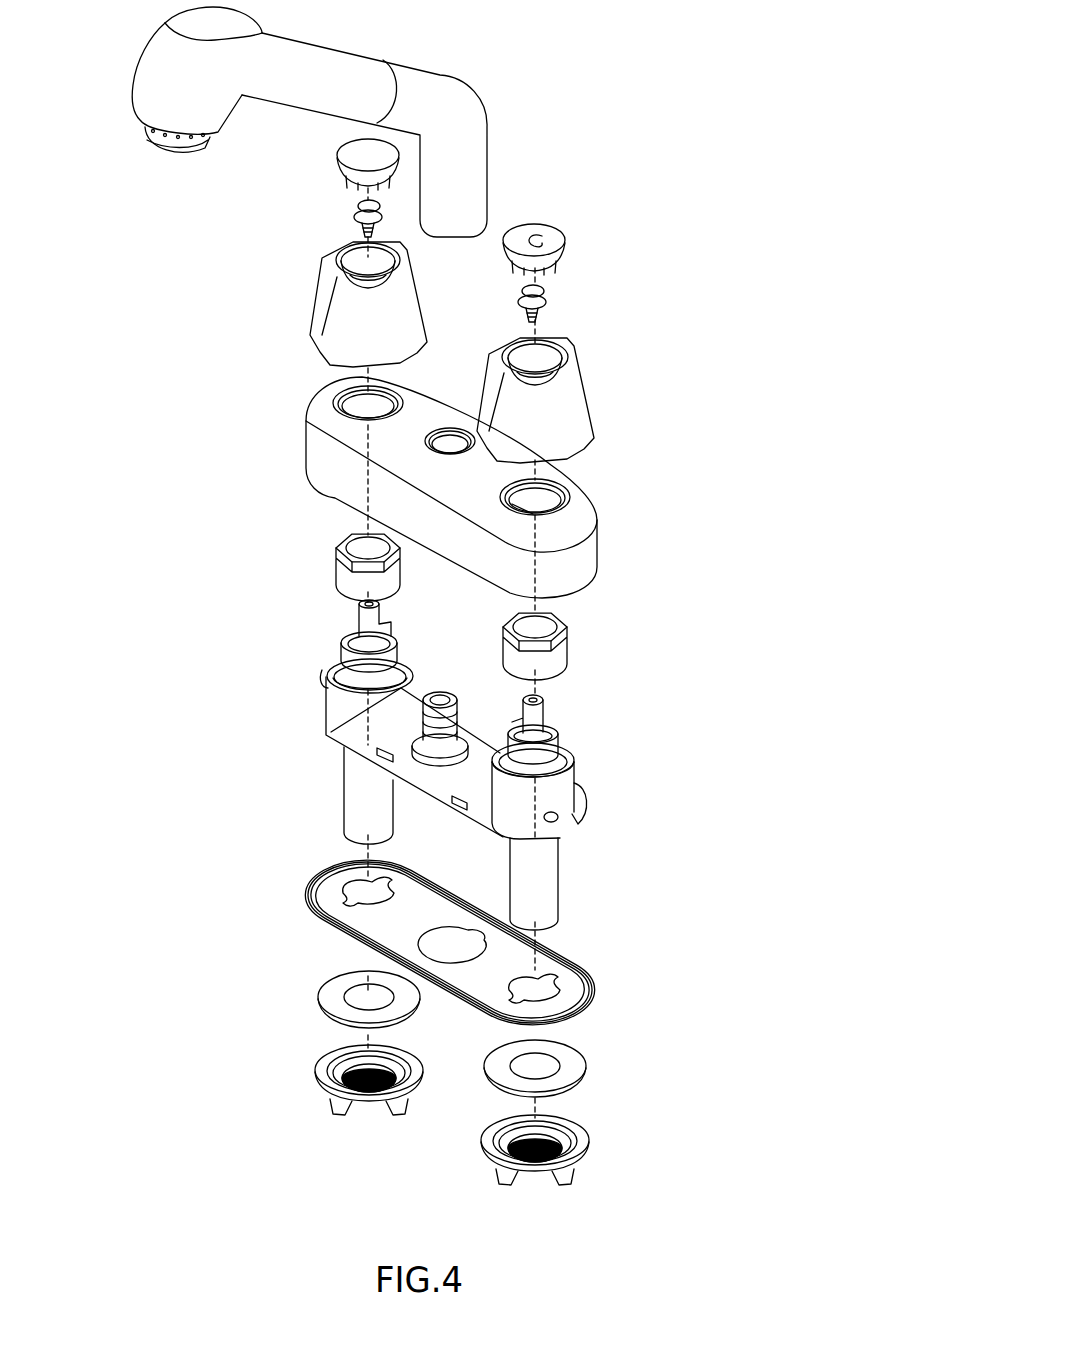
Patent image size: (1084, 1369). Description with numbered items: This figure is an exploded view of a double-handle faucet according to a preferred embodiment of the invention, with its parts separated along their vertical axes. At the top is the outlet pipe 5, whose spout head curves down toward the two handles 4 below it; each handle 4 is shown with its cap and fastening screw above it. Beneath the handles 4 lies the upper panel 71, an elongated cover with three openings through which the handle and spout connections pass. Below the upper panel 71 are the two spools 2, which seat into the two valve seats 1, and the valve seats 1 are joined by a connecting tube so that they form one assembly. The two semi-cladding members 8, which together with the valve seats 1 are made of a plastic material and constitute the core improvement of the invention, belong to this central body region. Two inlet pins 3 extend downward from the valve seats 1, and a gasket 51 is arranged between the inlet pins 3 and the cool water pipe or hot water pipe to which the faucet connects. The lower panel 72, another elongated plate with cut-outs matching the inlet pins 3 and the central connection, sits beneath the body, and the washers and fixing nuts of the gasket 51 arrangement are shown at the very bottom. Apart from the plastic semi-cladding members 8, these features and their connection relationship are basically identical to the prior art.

The valve seat 1 is at (333, 673).
The spool 2 is at (350, 673).
The inlet pin 3 is at (350, 793).
The handle 4 is at (322, 290).
The outlet pipe 5 is at (440, 78).
The semi-cladding member 8 is at (360, 737).
The gasket 51 is at (563, 1058).
The upper panel 71 is at (312, 453).
The lower panel 72 is at (308, 895).